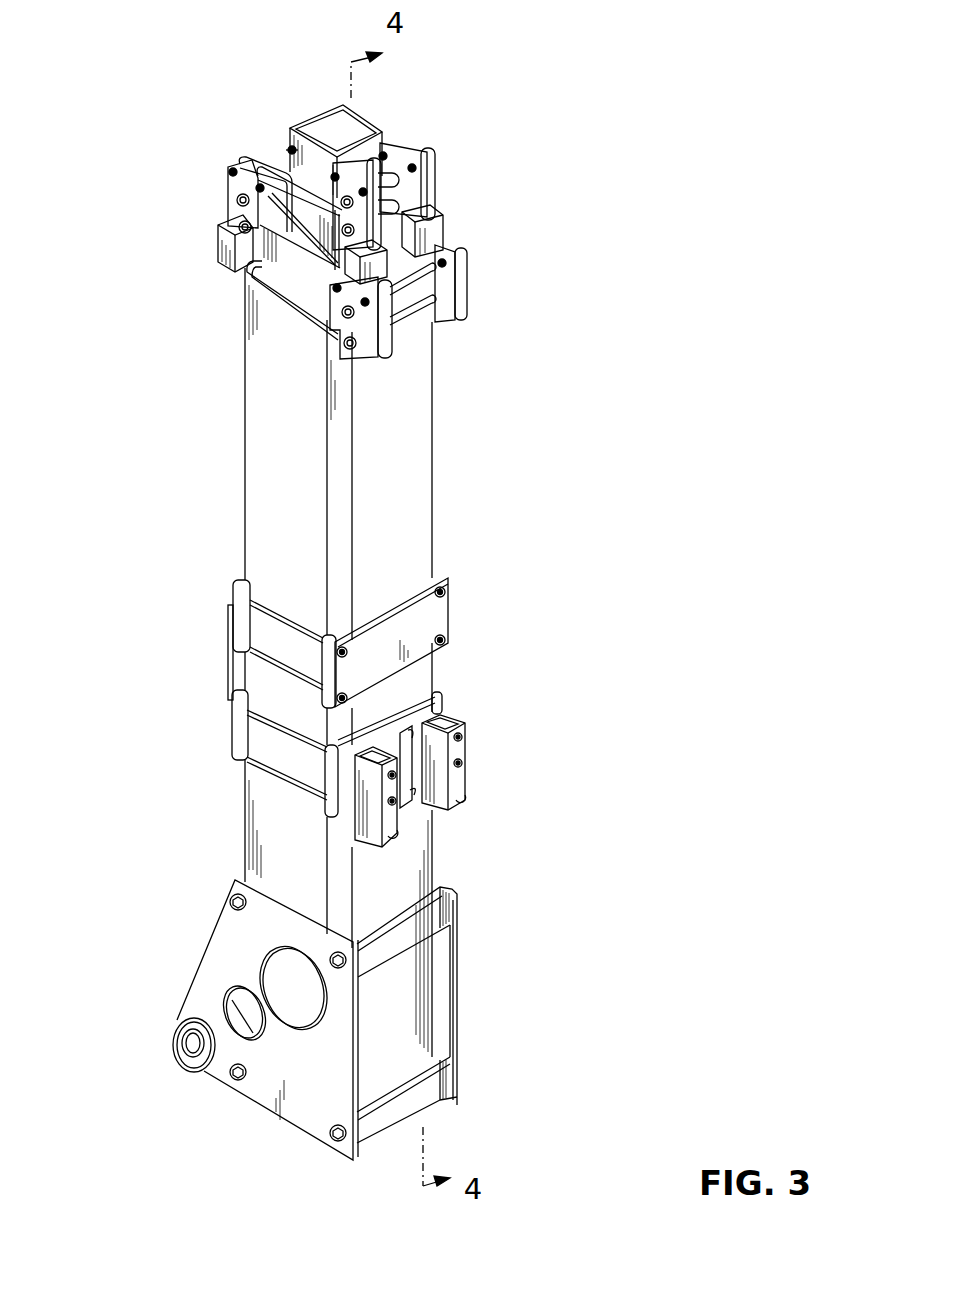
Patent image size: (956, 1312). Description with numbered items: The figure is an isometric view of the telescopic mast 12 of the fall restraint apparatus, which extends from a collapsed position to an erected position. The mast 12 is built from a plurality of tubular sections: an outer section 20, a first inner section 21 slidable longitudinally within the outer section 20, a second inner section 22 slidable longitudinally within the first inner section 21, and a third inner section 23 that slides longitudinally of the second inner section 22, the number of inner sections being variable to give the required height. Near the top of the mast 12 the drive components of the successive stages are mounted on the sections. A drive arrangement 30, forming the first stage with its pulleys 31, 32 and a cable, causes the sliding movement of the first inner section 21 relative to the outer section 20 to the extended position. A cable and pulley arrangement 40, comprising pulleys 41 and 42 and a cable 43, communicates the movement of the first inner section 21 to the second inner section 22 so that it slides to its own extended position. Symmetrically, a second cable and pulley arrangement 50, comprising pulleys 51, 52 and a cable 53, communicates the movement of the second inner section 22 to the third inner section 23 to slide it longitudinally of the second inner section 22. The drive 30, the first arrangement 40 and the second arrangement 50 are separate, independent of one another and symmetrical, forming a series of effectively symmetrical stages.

The mast 12 is at (472, 524).
The outer section 20 is at (410, 448).
The first inner section 21 is at (305, 298).
The second inner section 22 is at (307, 220).
The third inner section 23 is at (332, 110).
The drive arrangement 30 is at (460, 333).
The pulley 31 is at (395, 350).
The pulley 32 is at (467, 287).
The cable and pulley arrangement 40 is at (188, 177).
The pulley 41 is at (240, 162).
The pulley 42 is at (276, 158).
The cable 43 is at (270, 160).
The second cable and pulley arrangement 50 is at (444, 172).
The pulley 51 is at (360, 186).
The pulley 52 is at (406, 165).
The cable 53 is at (420, 170).